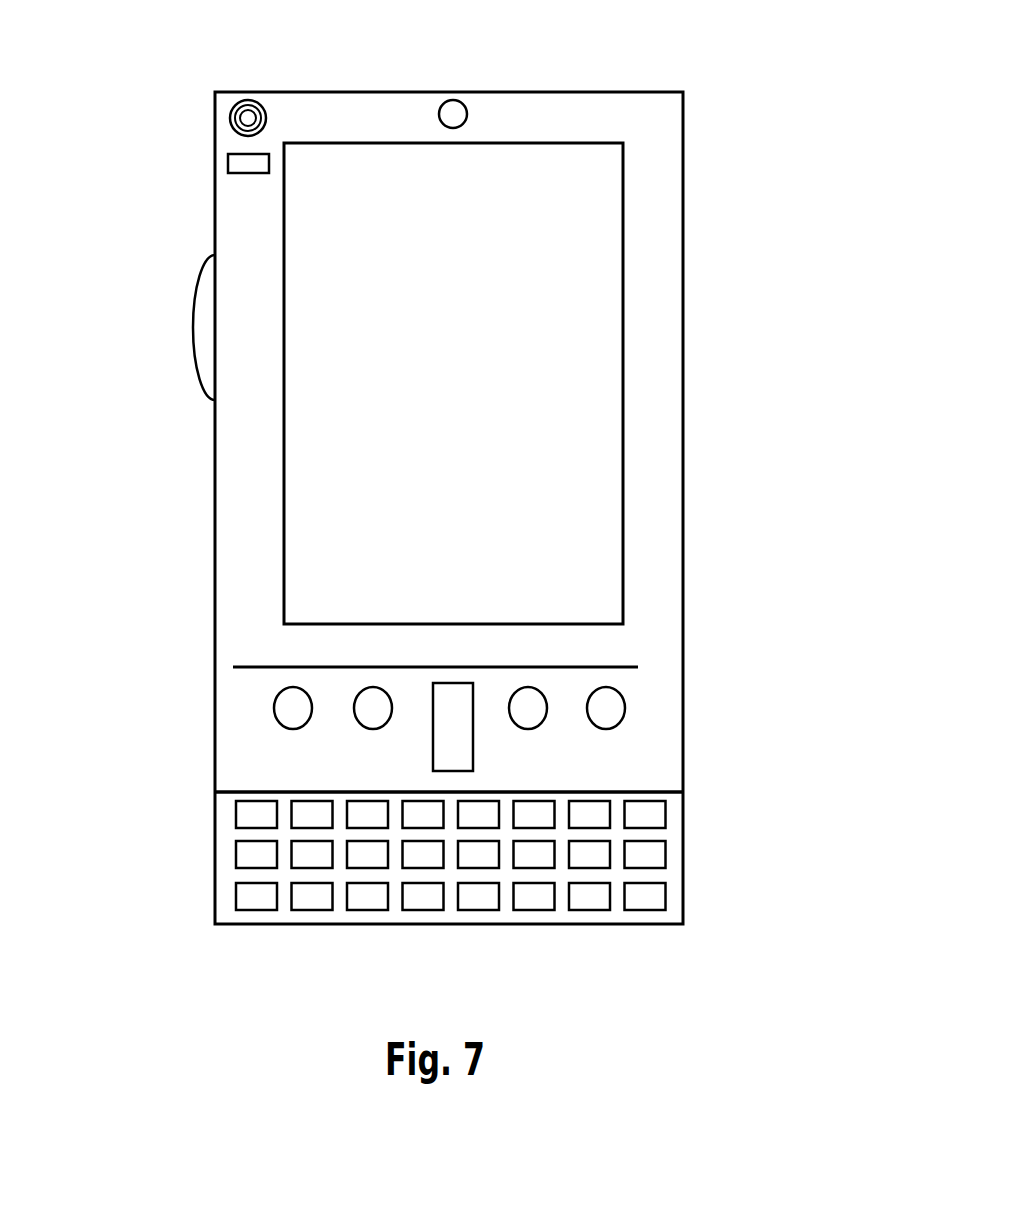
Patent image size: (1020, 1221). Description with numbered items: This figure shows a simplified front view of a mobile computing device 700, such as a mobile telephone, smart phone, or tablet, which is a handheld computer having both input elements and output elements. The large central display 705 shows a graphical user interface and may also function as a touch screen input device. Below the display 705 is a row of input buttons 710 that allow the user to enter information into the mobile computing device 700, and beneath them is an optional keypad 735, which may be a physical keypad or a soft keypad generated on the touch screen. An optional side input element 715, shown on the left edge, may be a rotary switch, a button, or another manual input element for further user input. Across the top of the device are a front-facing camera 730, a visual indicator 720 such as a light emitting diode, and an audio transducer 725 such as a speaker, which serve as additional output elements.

The mobile computing device 700 is at (671, 108).
The display 705 is at (388, 542).
The input buttons 710 is at (450, 733).
The side input element 715 is at (207, 327).
The visual indicator 720 is at (228, 168).
The audio transducer 725 is at (231, 118).
The front-facing camera 730 is at (466, 113).
The keypad 735 is at (222, 902).